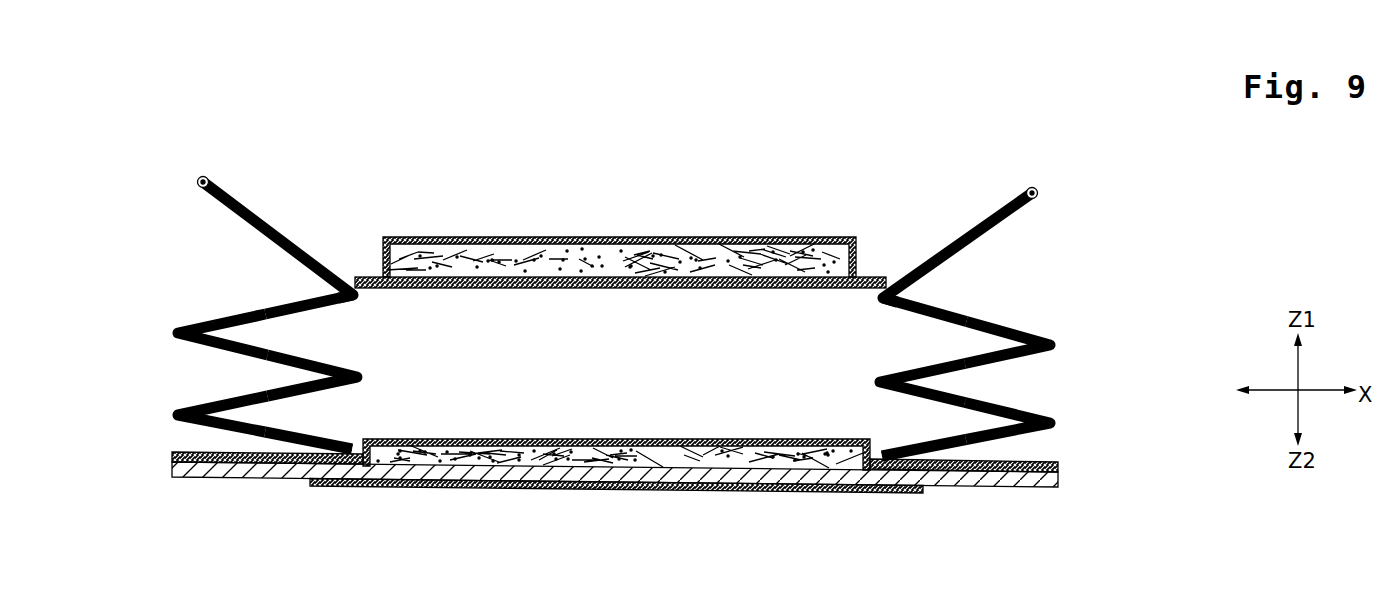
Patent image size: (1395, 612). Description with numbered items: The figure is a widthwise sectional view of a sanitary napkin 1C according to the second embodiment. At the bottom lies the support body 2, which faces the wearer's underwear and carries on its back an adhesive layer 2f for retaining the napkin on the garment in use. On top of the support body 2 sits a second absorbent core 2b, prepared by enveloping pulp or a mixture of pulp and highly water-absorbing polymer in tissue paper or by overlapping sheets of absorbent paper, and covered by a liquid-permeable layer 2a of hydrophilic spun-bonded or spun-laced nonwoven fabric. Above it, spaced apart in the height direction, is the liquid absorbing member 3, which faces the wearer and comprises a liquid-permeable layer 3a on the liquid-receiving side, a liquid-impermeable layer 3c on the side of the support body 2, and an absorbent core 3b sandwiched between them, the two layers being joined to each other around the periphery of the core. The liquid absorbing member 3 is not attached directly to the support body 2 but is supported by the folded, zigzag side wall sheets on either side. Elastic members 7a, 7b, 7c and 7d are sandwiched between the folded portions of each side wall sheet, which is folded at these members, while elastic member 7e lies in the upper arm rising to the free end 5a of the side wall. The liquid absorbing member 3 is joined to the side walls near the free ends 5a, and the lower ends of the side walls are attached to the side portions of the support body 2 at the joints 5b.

The sanitary napkin 1C is at (822, 174).
The support body 2 is at (247, 470).
The liquid-permeable layer 2a is at (590, 439).
The second absorbent core 2b is at (660, 453).
The adhesive layer 2f is at (680, 490).
The liquid absorbing member 3 is at (697, 228).
The liquid-permeable layer 3a is at (480, 237).
The absorbent core 3b is at (547, 240).
The liquid-impermeable layer 3c is at (510, 288).
The free end 5a is at (203, 178).
The lower spring joint 5b is at (377, 468).
The elastic member 7a is at (176, 415).
The elastic member 7b is at (360, 376).
The elastic member 7c is at (176, 333).
The elastic member 7d is at (362, 295).
The elastic member 7e is at (210, 183).